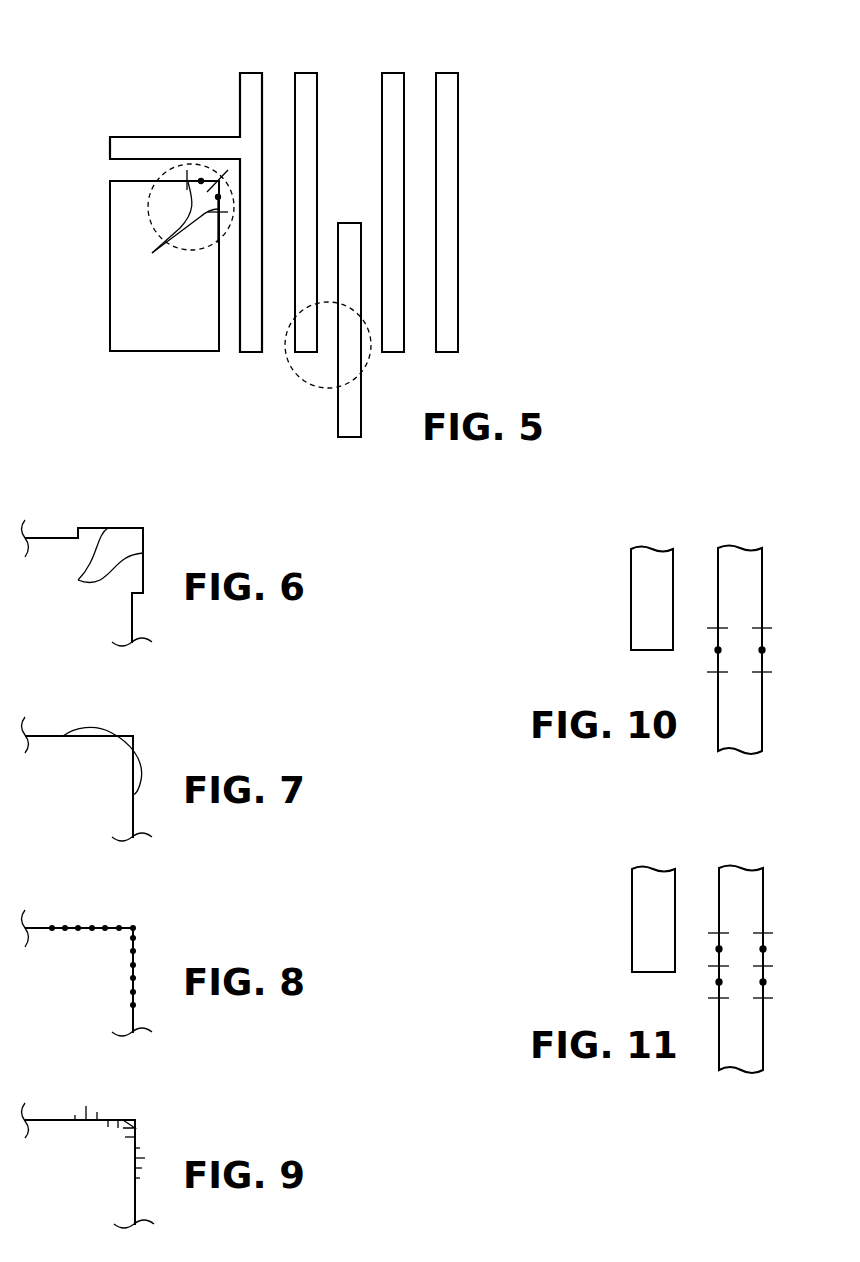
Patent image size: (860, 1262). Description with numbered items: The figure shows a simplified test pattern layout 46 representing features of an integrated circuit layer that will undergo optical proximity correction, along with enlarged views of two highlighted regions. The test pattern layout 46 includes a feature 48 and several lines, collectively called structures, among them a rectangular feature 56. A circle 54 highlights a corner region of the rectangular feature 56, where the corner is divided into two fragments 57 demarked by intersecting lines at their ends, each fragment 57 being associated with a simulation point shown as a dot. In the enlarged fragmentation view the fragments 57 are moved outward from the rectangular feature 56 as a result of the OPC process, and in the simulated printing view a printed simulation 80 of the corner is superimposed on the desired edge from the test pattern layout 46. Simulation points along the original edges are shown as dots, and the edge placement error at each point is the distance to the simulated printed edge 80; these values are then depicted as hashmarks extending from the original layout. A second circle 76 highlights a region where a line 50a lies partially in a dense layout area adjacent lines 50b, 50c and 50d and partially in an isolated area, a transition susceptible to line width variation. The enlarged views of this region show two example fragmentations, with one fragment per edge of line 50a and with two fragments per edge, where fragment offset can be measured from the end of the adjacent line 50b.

In FIG. 5, the test pattern layout 46 is at (185, 95).
In FIG. 5, the feature 48 is at (165, 340).
In FIG. 5, the line 50a is at (352, 427).
In FIG. 10, the line 50a is at (738, 713).
In FIG. 11, the line 50a is at (740, 1033).
In FIG. 5, the line 50b is at (307, 85).
In FIG. 10, the line 50b is at (652, 565).
In FIG. 11, the line 50b is at (653, 885).
In FIG. 5, the line 50c is at (393, 85).
In FIG. 5, the line 50d is at (447, 117).
In FIG. 5, the circle 54 is at (190, 250).
In FIG. 5, the rectangular feature 56 is at (122, 307).
In FIG. 8, the rectangular feature 56 is at (156, 918).
In FIG. 9, the rectangular feature 56 is at (156, 1110).
In FIG. 5, the fragment 57 is at (179, 226).
In FIG. 6, the fragment 57 is at (87, 583).
In FIG. 5, the circle 76 is at (298, 380).
In FIG. 7, the printed simulation 80 is at (142, 772).